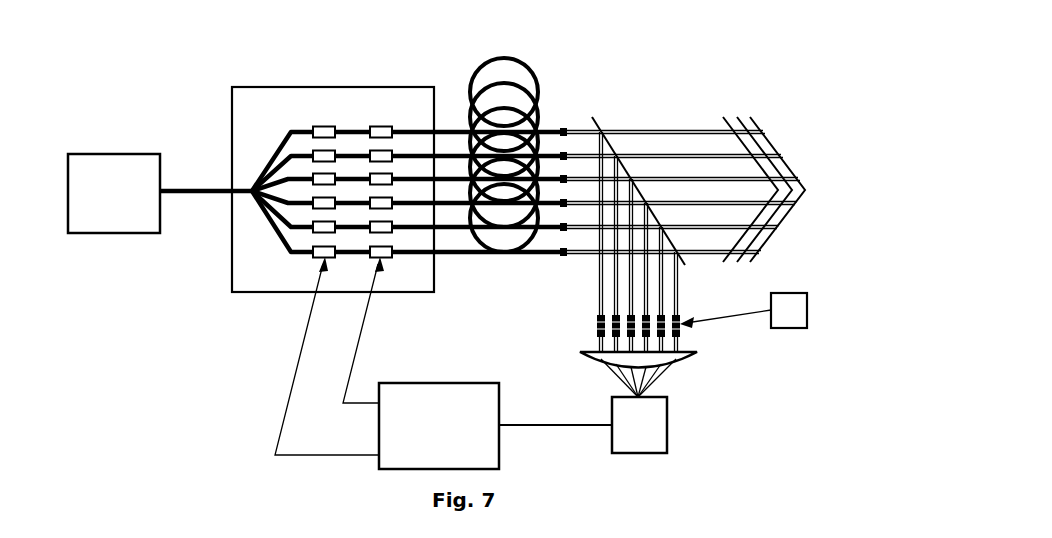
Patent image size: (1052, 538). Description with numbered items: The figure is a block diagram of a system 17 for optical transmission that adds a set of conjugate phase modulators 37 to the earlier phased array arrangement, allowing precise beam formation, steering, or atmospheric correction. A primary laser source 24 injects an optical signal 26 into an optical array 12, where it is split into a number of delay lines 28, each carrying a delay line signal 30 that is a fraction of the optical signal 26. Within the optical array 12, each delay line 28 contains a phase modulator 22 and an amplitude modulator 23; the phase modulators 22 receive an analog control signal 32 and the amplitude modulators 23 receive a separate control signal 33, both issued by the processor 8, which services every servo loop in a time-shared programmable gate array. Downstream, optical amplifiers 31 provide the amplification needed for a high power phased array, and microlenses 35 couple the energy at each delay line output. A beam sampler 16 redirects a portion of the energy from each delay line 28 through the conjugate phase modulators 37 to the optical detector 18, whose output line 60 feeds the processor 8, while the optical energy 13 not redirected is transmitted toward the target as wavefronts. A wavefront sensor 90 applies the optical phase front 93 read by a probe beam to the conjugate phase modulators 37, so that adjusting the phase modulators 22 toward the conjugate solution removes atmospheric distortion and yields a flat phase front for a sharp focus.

The processor 8 is at (434, 381).
The optical array 12 is at (245, 97).
The optical energy 13 is at (805, 190).
The beam sampler 16 is at (596, 118).
The system 17 is at (758, 474).
The optical detector 18 is at (667, 425).
The modulators 22 is at (323, 124).
The amplitude modulators 23 is at (387, 126).
The primary laser source 24 is at (115, 162).
The optical signal 26 is at (193, 188).
The delay lines 28 is at (358, 128).
The delay line signal 30 is at (445, 127).
The optical amplifiers 31 is at (527, 65).
The analog control signal 32 is at (303, 452).
The control signal 33 is at (360, 401).
The microlens 35 is at (564, 126).
The conjugate phase modulators 37 is at (596, 323).
The detector signal line 60 is at (557, 423).
The wavefront sensor 90 is at (772, 294).
The optical phase front 93 is at (728, 315).